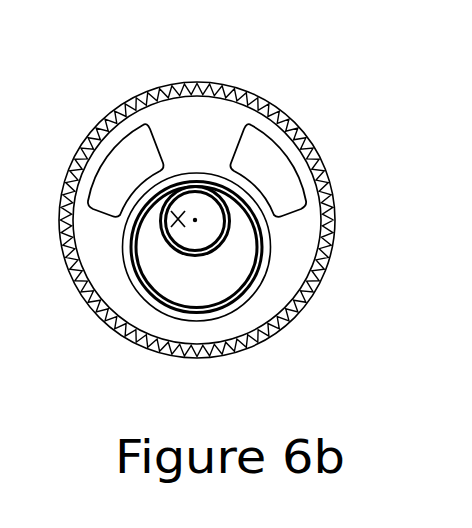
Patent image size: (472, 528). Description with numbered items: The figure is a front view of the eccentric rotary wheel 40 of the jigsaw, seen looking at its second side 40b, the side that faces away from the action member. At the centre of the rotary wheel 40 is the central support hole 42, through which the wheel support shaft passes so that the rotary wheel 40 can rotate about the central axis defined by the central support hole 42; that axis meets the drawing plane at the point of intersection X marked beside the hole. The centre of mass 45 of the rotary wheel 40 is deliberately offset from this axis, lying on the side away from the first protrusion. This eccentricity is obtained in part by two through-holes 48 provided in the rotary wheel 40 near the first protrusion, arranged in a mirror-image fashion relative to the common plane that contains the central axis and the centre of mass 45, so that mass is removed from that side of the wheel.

The rotary wheel 40 is at (145, 79).
The second side 40b is at (288, 233).
The central support hole 42 is at (198, 205).
The centre of mass 45 is at (195, 265).
The through-holes 48 is at (262, 157).